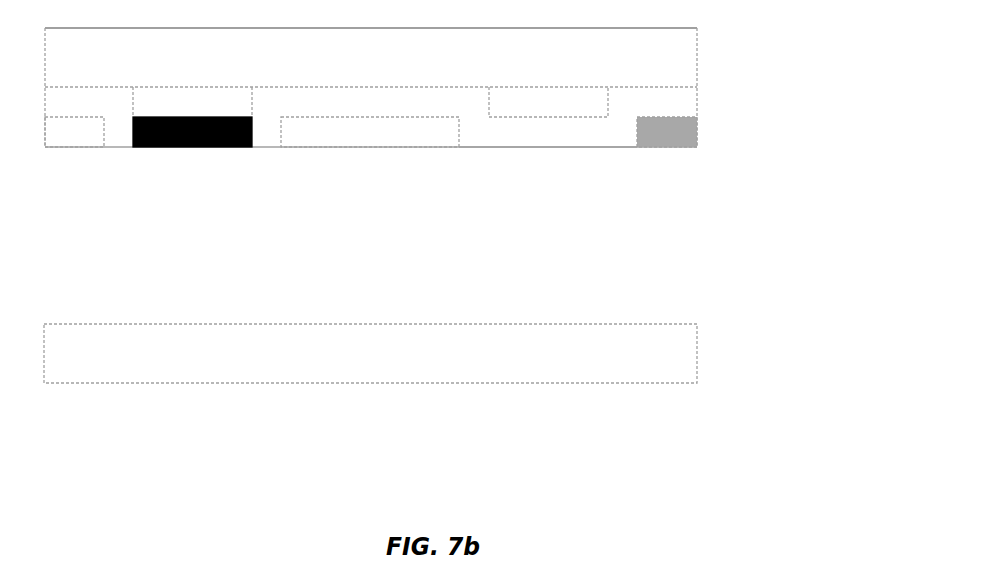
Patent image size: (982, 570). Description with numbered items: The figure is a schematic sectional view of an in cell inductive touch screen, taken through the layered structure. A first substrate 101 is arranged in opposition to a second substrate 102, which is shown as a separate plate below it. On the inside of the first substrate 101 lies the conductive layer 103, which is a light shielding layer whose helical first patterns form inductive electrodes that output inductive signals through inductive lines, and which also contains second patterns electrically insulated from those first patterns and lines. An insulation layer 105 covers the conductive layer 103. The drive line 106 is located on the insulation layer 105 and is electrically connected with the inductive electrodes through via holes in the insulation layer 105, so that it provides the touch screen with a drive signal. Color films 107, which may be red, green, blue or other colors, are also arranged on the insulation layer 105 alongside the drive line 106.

The first substrate 101 is at (697, 62).
The second substrate 102 is at (697, 353).
The conductive layer 103 is at (607, 105).
The insulation layer 105 is at (555, 135).
The drive line 106 is at (213, 147).
The color films 107 is at (68, 147).